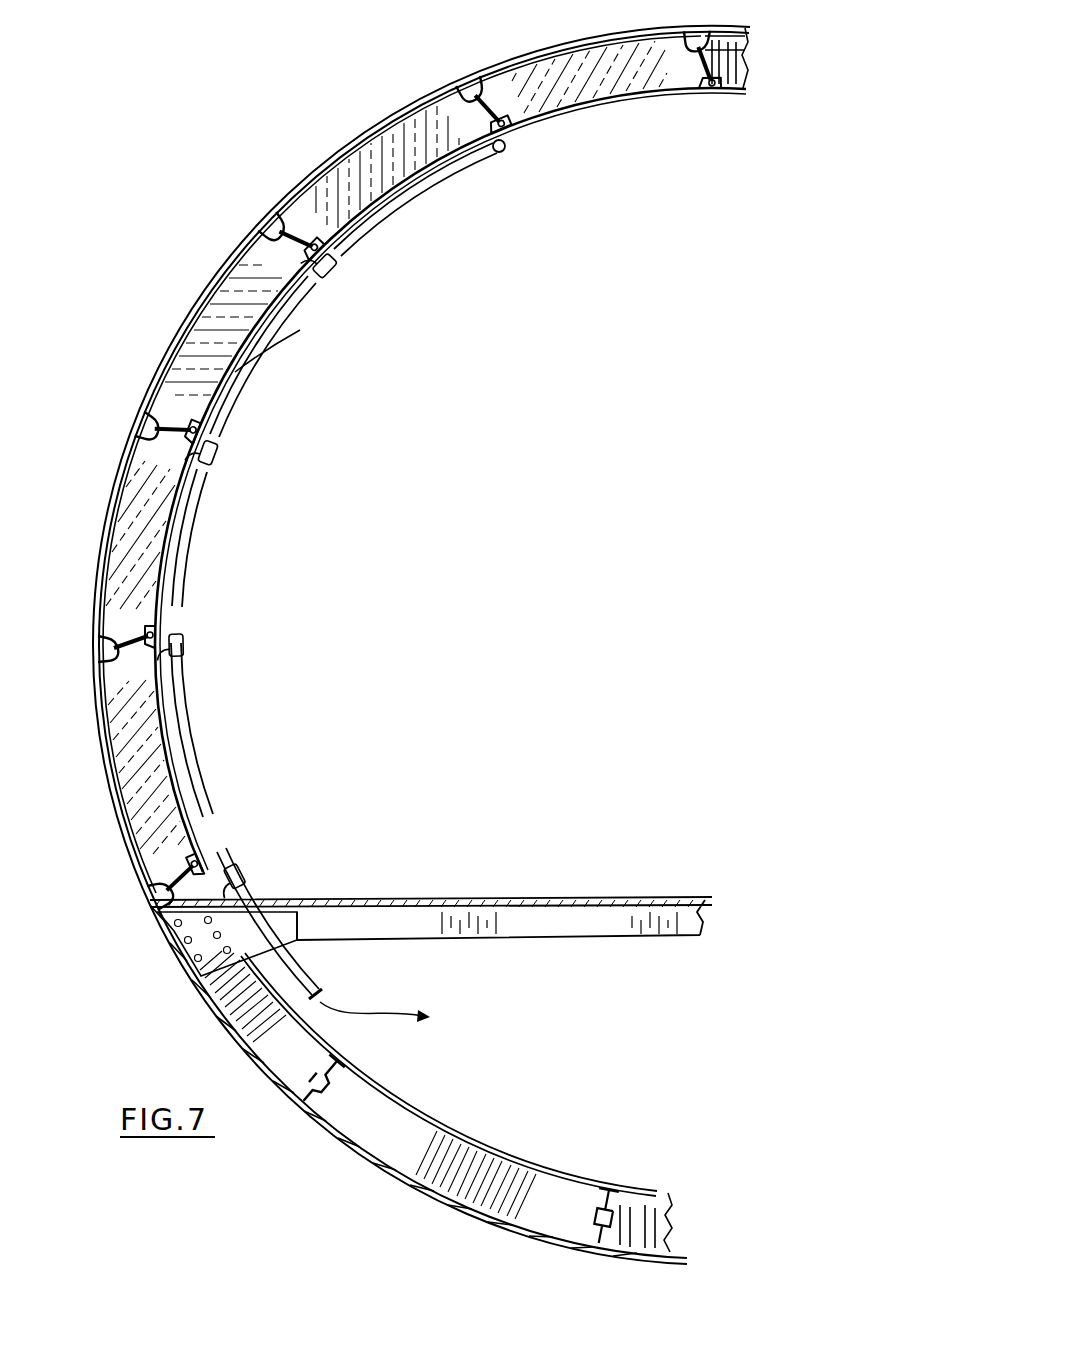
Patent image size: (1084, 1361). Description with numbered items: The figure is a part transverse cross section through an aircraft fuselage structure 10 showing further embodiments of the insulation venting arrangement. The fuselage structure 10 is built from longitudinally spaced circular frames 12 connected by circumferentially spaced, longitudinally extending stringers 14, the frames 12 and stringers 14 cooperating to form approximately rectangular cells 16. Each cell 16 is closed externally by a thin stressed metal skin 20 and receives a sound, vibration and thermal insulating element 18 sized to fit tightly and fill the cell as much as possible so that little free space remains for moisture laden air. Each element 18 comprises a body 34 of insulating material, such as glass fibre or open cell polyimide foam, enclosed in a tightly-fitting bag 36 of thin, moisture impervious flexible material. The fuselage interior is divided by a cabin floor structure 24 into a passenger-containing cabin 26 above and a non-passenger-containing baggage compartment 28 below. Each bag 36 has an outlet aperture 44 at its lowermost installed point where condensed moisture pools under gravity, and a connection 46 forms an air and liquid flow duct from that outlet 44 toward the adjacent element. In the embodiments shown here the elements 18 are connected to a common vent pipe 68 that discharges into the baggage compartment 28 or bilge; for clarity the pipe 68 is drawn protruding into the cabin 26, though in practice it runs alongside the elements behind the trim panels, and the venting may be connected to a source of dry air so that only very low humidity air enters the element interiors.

The aircraft fuselage structure 10 is at (183, 192).
The circular frame 12 is at (712, 76).
The stringer 14 is at (480, 95).
The cell 16 is at (150, 420).
The insulating element 18 is at (345, 170).
The stressed metal skin 20 is at (188, 318).
The cabin floor structure 24 is at (508, 898).
The passenger-containing cabin 26 is at (453, 386).
The baggage compartment 28 is at (446, 1017).
The body 34 is at (250, 350).
The bag 36 is at (237, 375).
The outlet aperture 44 is at (343, 262).
The connection 46 is at (218, 448).
The common vent pipe 68 is at (492, 158).